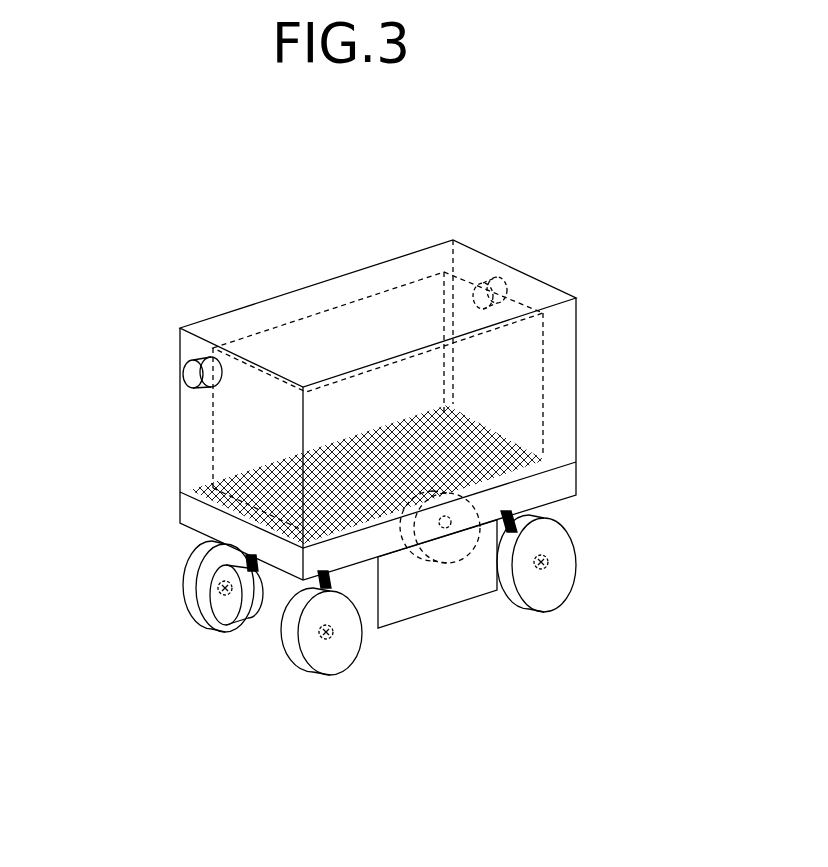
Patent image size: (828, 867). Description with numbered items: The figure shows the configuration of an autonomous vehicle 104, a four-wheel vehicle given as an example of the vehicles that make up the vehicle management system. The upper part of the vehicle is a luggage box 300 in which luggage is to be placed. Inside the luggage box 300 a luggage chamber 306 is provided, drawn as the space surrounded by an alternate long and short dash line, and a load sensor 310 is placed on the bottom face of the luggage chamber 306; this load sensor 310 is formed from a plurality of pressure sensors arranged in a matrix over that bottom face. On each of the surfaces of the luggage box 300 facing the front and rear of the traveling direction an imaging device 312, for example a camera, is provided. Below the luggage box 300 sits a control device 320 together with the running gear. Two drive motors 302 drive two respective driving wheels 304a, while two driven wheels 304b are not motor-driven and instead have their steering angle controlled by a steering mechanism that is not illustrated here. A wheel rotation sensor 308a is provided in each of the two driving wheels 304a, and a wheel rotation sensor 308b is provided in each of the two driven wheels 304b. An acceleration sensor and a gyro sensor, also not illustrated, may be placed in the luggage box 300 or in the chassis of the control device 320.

The autonomous vehicle 104 is at (138, 224).
The luggage box 300 is at (188, 427).
The drive motor 302 is at (227, 634).
The driving wheel 304a is at (190, 598).
The driven wheel 304b is at (520, 571).
The luggage chamber 306 is at (326, 330).
The wheel rotation sensor 308a is at (187, 555).
The wheel rotation sensor 308b is at (446, 533).
The load sensor 310 is at (283, 483).
The imaging device 312 is at (180, 367).
The control device 320 is at (386, 630).